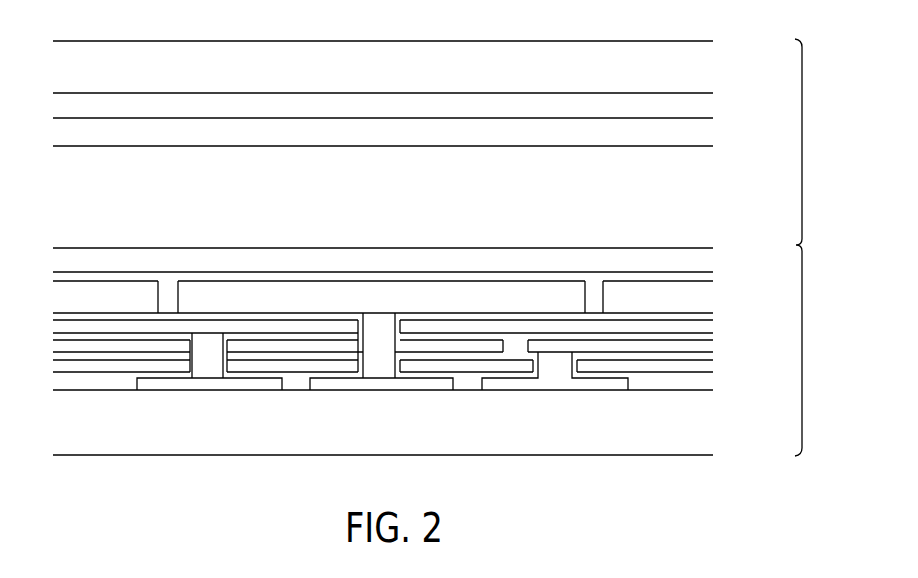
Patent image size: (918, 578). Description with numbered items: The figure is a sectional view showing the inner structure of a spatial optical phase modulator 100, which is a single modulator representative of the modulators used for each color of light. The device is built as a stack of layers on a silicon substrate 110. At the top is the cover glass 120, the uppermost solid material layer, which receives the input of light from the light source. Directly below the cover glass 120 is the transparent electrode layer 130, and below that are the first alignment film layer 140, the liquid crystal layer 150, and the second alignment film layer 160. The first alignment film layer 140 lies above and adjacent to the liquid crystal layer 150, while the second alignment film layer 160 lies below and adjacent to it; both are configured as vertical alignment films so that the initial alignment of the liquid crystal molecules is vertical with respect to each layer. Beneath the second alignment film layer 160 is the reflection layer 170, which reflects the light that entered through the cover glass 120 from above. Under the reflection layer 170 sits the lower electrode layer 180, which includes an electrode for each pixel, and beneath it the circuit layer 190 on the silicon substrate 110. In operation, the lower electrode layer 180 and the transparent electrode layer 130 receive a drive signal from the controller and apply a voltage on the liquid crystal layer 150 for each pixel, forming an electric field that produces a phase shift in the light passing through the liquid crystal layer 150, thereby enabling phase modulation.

The spatial optical phase modulator 100 is at (824, 247).
The silicon substrate 110 is at (707, 427).
The cover glass 120 is at (708, 69).
The transparent electrode layer 130 is at (707, 103).
The first alignment film layer 140 is at (706, 133).
The liquid crystal layer 150 is at (707, 195).
The second alignment film layer 160 is at (705, 260).
The reflection layer 170 is at (712, 277).
The lower electrode layer 180 is at (705, 297).
The circuit layer 190 is at (720, 313).